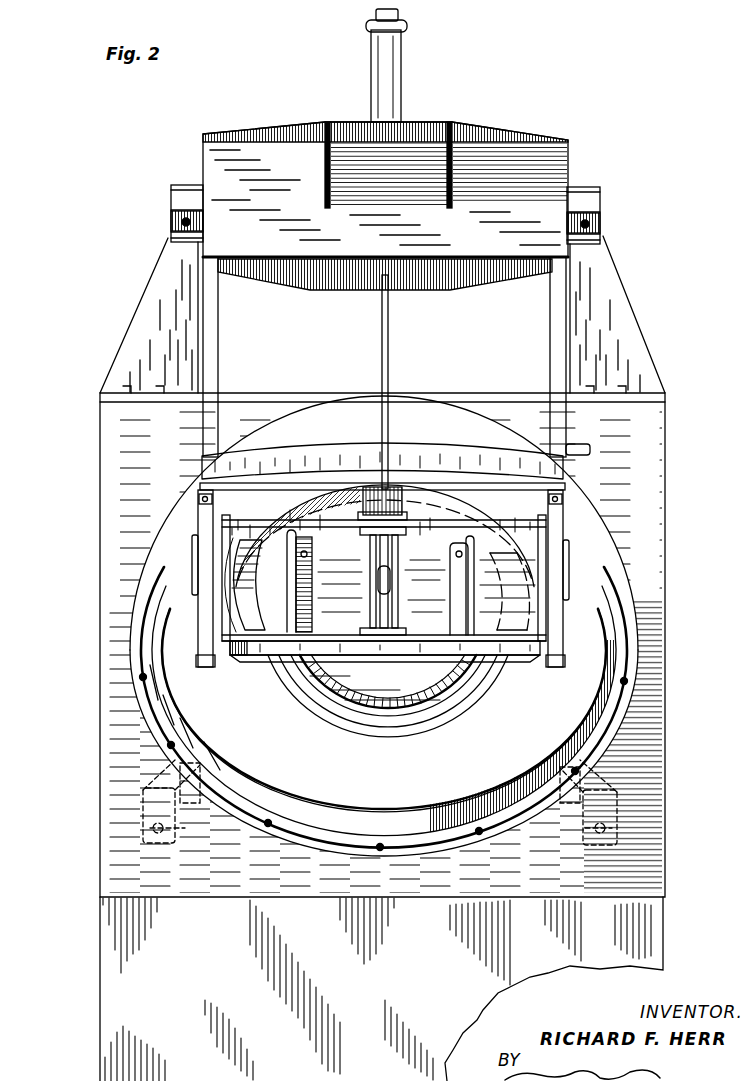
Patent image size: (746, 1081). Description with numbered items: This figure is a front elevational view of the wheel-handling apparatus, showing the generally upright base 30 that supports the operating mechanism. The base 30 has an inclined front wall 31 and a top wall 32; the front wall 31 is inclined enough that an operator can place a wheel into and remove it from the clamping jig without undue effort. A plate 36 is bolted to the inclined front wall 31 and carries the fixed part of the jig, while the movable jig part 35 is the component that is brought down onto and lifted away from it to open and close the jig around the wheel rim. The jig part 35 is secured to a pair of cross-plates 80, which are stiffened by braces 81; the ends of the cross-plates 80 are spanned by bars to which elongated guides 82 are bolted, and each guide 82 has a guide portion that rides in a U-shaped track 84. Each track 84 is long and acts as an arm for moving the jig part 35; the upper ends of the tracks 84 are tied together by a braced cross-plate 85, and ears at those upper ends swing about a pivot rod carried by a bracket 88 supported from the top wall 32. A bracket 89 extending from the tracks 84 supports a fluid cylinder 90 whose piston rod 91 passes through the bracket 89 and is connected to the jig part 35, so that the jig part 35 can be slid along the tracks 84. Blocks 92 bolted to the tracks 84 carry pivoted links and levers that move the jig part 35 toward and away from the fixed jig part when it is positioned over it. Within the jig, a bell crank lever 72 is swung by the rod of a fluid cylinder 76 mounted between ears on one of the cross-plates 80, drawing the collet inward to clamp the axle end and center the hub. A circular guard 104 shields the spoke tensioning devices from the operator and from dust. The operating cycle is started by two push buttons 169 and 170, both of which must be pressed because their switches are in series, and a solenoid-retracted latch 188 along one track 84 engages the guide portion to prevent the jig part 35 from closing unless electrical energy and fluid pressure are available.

The base 30 is at (90, 995).
The inclined front wall 31 is at (108, 462).
The top wall 32 is at (254, 404).
The jig part 35 is at (342, 686).
The plate 36 is at (298, 838).
The bell crank lever 72 is at (382, 556).
The fluid cylinder 76 is at (380, 494).
The cross-plates 80 is at (266, 645).
The braces 81 is at (455, 598).
The elongated guide 82 is at (540, 657).
The track 84 is at (218, 350).
The cross-plate 85 is at (518, 258).
The bracket 88 is at (148, 306).
The bracket 89 is at (435, 290).
The fluid cylinder 90 is at (390, 86).
The piston rod 91 is at (381, 326).
The blocks 92 is at (196, 566).
The circular guard 104 is at (176, 688).
The push button 169 is at (215, 764).
The push button 170 is at (553, 766).
The latch 188 is at (589, 452).